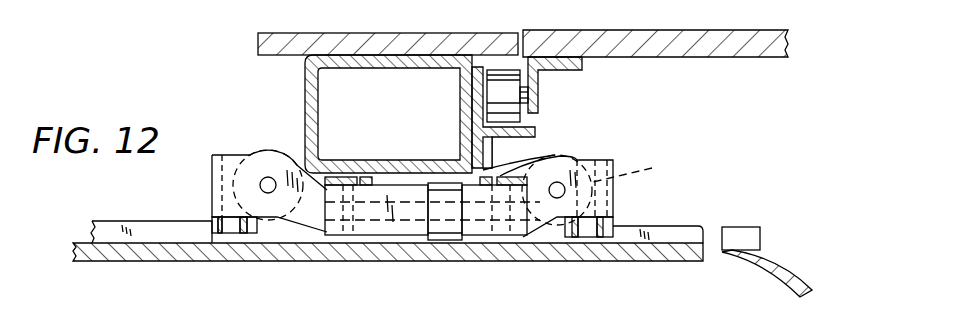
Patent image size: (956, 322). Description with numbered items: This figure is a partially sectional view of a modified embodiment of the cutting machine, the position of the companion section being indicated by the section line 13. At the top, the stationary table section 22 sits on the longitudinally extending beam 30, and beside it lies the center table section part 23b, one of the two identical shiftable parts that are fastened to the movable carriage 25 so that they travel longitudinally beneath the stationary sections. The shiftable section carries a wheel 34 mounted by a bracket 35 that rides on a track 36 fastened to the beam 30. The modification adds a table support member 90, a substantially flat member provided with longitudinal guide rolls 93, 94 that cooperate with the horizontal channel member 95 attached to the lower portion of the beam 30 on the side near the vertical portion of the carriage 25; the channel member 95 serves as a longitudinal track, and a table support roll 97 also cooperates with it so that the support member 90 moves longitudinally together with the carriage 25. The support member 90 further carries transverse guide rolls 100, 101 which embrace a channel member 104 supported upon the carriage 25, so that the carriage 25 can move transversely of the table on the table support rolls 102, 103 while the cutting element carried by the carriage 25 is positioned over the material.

The section line 13- 13 is at (188, 3).
The stationary table section 22 is at (300, 16).
The center table section part 23b is at (697, 36).
The movable carriage 25 is at (808, 243).
The beam 30 is at (305, 108).
The wheel 34 is at (498, 88).
The bracket 35 is at (538, 97).
The track 36 is at (477, 130).
The table support member 90 is at (617, 158).
The longitudinal guide roll 93 is at (507, 185).
The longitudinal guide roll 94 is at (353, 187).
The horizontal channel member 95 is at (524, 165).
The table support roll 97 is at (448, 238).
The transverse guide roll 100 is at (592, 236).
The transverse guide roll 101 is at (240, 233).
The table support roll 102 is at (641, 170).
The table support roll 103 is at (270, 151).
The channel member 104 is at (687, 241).